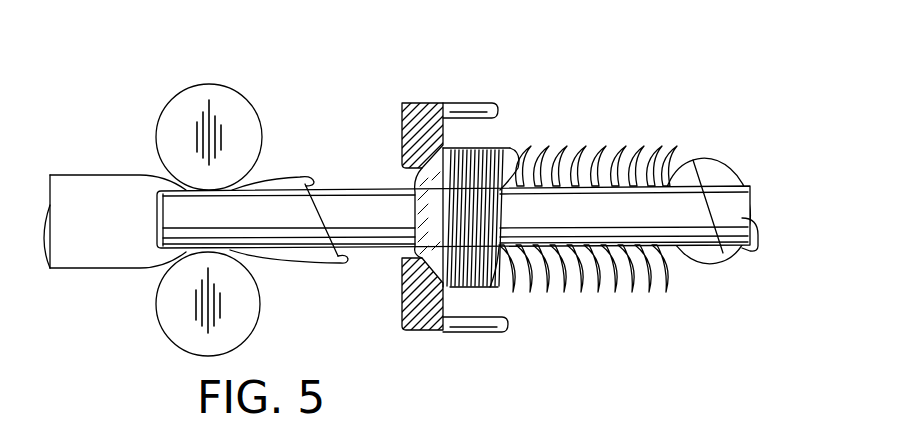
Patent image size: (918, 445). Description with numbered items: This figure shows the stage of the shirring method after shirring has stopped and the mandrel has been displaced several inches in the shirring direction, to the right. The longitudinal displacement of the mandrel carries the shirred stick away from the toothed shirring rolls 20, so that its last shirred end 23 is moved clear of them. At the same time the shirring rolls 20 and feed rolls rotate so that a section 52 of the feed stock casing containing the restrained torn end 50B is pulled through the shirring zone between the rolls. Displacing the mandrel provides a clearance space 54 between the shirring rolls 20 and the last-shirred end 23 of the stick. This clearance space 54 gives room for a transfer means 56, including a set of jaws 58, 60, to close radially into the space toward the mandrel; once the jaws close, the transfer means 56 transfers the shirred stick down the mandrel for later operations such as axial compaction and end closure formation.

The shirring rolls 20 is at (170, 312).
The last shirred end 23 is at (460, 287).
The restrained feed stock casing torn end 50B is at (330, 192).
The section of the feed stock casing 52 is at (298, 266).
The clearance space 54 is at (392, 102).
The transfer means 56 is at (478, 85).
The jaw 58 is at (420, 102).
The jaw 60 is at (408, 333).